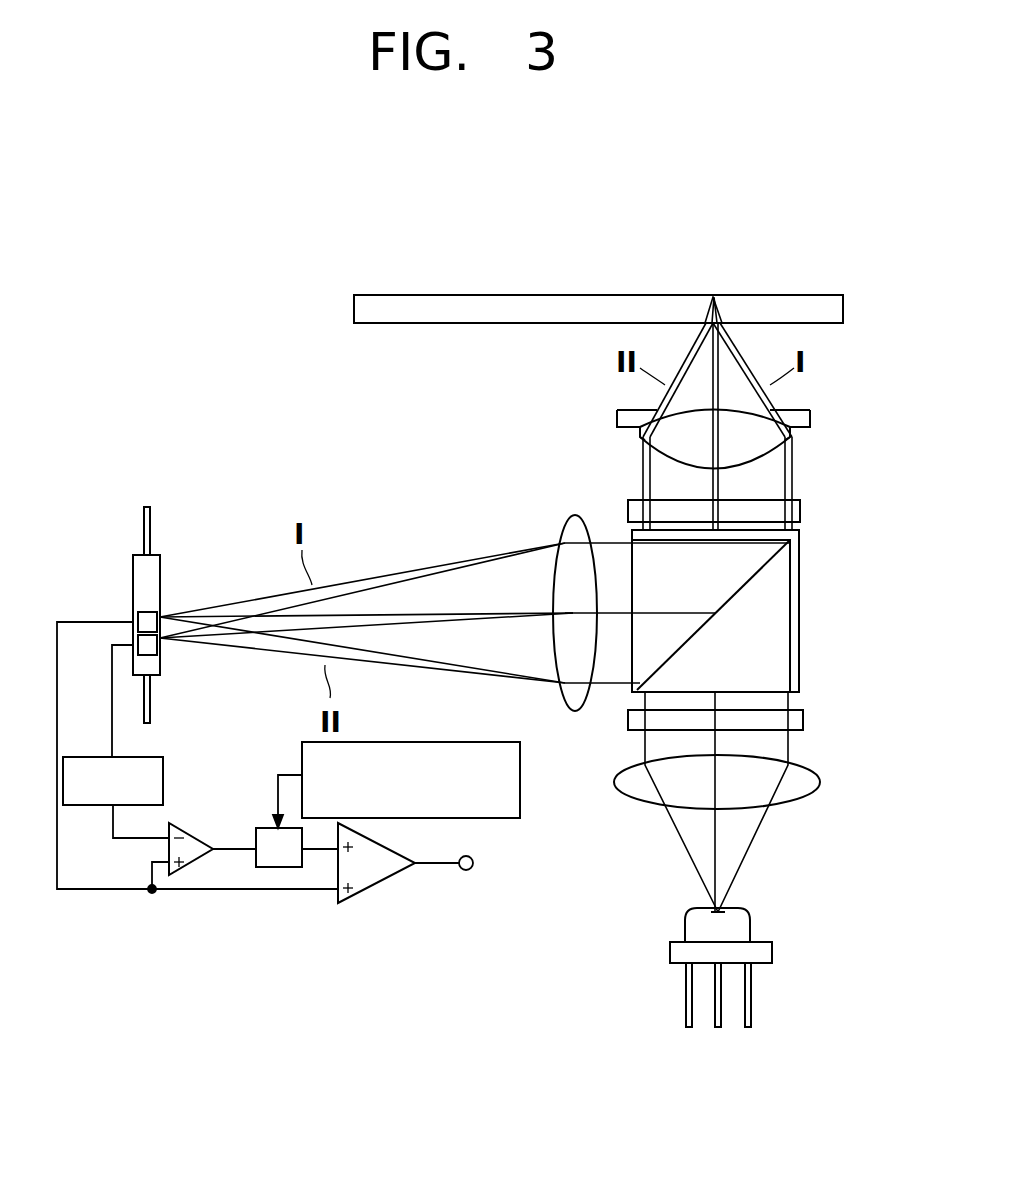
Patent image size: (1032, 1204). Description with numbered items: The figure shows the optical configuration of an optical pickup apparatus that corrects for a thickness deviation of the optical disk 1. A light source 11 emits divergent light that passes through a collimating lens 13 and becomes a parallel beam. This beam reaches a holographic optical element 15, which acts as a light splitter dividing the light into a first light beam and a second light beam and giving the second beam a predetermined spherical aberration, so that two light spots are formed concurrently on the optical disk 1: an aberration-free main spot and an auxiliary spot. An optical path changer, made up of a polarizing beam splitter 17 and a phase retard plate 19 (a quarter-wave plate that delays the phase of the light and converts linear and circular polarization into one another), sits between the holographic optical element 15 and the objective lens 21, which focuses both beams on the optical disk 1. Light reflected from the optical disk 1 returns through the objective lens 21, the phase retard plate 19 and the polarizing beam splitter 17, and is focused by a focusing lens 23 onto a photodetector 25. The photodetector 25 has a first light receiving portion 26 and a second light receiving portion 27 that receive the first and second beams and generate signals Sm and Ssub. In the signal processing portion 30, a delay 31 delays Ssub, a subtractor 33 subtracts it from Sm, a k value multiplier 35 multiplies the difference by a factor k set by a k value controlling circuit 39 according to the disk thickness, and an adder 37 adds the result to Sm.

The optical disk 1 is at (843, 302).
The light source 11 is at (767, 949).
The collimating lens 13 is at (815, 781).
The holographic optical element 15 is at (804, 720).
The polarizing beam splitter 17 is at (797, 650).
The phase retard plate 19 is at (800, 512).
The objective lens 21 is at (810, 418).
The focusing lens 23 is at (575, 700).
The photodetector 25 is at (159, 615).
The first light receiving portion 26 is at (162, 615).
The second light receiving portion 27 is at (138, 638).
The signal processing portion 30 is at (308, 820).
The delay 31 is at (165, 780).
The subtractor 33 is at (230, 818).
The k value multiplier 35 is at (252, 863).
The adder 37 is at (393, 888).
The k value controlling circuit 39 is at (520, 792).